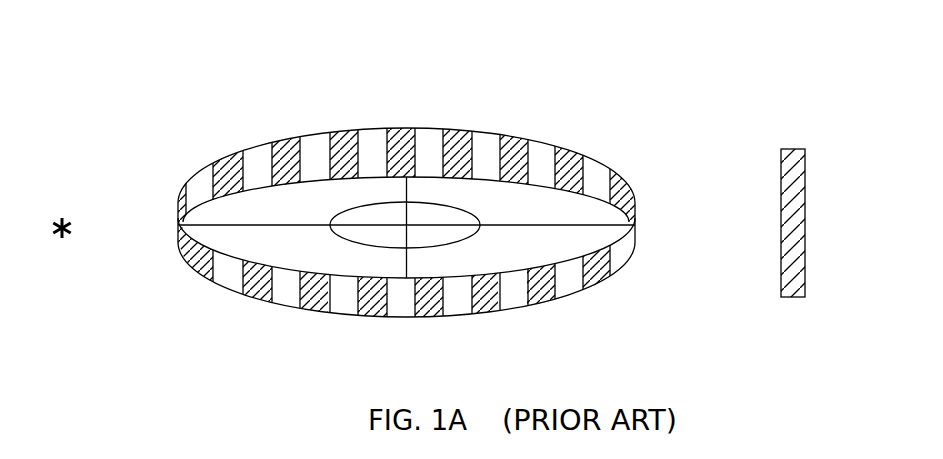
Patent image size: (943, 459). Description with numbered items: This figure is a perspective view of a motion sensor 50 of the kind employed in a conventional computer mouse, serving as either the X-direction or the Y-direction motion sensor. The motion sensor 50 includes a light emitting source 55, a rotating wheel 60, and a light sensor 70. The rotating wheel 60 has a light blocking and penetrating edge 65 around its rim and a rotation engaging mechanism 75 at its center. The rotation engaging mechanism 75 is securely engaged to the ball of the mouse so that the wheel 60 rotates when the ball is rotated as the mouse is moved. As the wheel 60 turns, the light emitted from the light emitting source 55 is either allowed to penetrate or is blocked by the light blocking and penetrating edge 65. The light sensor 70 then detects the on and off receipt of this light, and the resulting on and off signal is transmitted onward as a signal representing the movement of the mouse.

The motion sensor 50 is at (609, 58).
The light emitting source 55 is at (68, 258).
The rotating wheel 60 is at (570, 282).
The light blocking and penetrating edge 65 is at (480, 302).
The light sensor 70 is at (790, 153).
The rotation engaging mechanism 75 is at (357, 230).